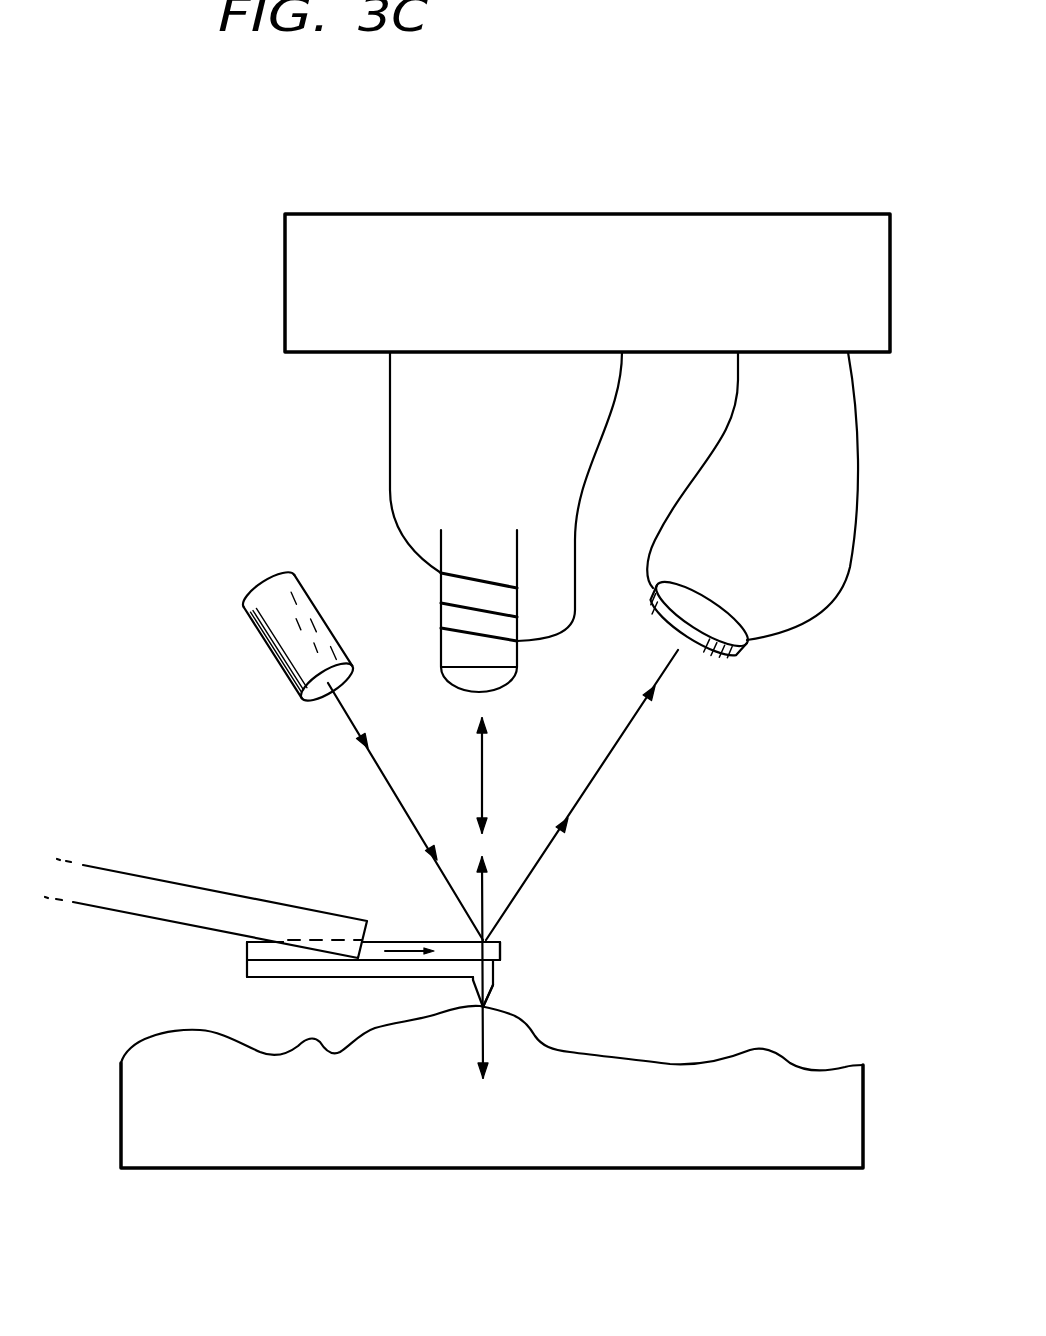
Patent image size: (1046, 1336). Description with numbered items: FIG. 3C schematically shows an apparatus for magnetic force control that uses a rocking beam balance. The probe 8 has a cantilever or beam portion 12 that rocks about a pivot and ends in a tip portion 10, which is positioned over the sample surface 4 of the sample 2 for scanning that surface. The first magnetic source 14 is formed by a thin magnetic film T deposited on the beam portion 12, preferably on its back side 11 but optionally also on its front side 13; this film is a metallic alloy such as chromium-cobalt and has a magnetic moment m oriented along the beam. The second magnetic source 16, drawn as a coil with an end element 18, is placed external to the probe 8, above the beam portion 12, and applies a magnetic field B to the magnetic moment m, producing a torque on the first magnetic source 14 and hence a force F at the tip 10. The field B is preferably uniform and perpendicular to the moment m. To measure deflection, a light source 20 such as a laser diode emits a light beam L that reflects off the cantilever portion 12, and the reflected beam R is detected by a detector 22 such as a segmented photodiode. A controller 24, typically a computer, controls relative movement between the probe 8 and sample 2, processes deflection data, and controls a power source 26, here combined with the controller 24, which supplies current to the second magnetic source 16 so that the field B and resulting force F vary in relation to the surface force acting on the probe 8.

The sample 2 is at (518, 1073).
The sample surface 4 is at (755, 1050).
The probe 8 is at (208, 850).
The tip portion 10 is at (493, 982).
The back side 11 is at (247, 942).
The cantilever portion 12 is at (243, 967).
The front side 13 is at (323, 980).
The first magnetic source 14 is at (378, 935).
The second magnetic source 16 is at (517, 539).
The coil core 18 is at (503, 690).
The light source 20 is at (259, 593).
The detector 22 is at (710, 600).
The controller 24 is at (587, 239).
The power source 26 is at (557, 213).
The light beam L is at (340, 713).
The reflected beam R is at (632, 733).
The magnetic field B is at (483, 777).
The thin magnetic film T is at (500, 952).
The force F is at (487, 988).
The magnetic moment m is at (397, 958).